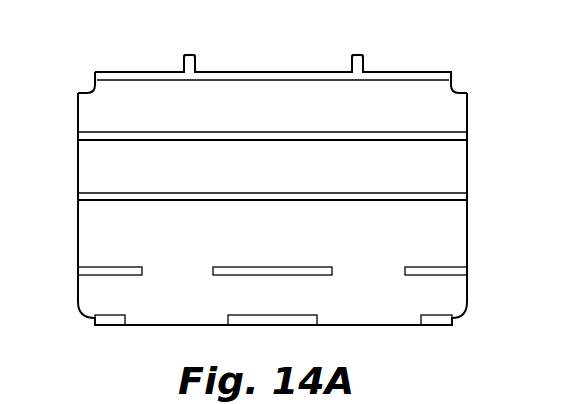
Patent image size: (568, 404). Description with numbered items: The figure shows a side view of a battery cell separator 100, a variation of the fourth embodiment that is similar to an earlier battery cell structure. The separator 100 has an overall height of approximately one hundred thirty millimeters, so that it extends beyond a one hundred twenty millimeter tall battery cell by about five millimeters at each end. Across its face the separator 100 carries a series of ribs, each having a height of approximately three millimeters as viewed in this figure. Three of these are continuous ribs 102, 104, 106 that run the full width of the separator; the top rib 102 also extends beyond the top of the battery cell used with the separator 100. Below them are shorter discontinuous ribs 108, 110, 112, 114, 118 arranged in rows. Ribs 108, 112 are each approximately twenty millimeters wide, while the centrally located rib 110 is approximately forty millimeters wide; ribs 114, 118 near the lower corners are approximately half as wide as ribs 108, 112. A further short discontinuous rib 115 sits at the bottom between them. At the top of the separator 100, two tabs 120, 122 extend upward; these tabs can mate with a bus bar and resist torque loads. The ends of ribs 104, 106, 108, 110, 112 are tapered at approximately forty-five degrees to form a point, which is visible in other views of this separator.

The battery cell separator 100 is at (422, 43).
The continuous rib 102 is at (112, 71).
The continuous rib 104 is at (290, 132).
The continuous rib 106 is at (290, 193).
The discontinuous rib 108 is at (110, 265).
The discontinuous rib 110 is at (290, 265).
The discontinuous rib 112 is at (438, 265).
The discontinuous rib 114 is at (110, 313).
The center bottom plate 115 is at (290, 313).
The discontinuous rib 118 is at (438, 313).
The tab 120 is at (186, 55).
The tab 122 is at (355, 55).